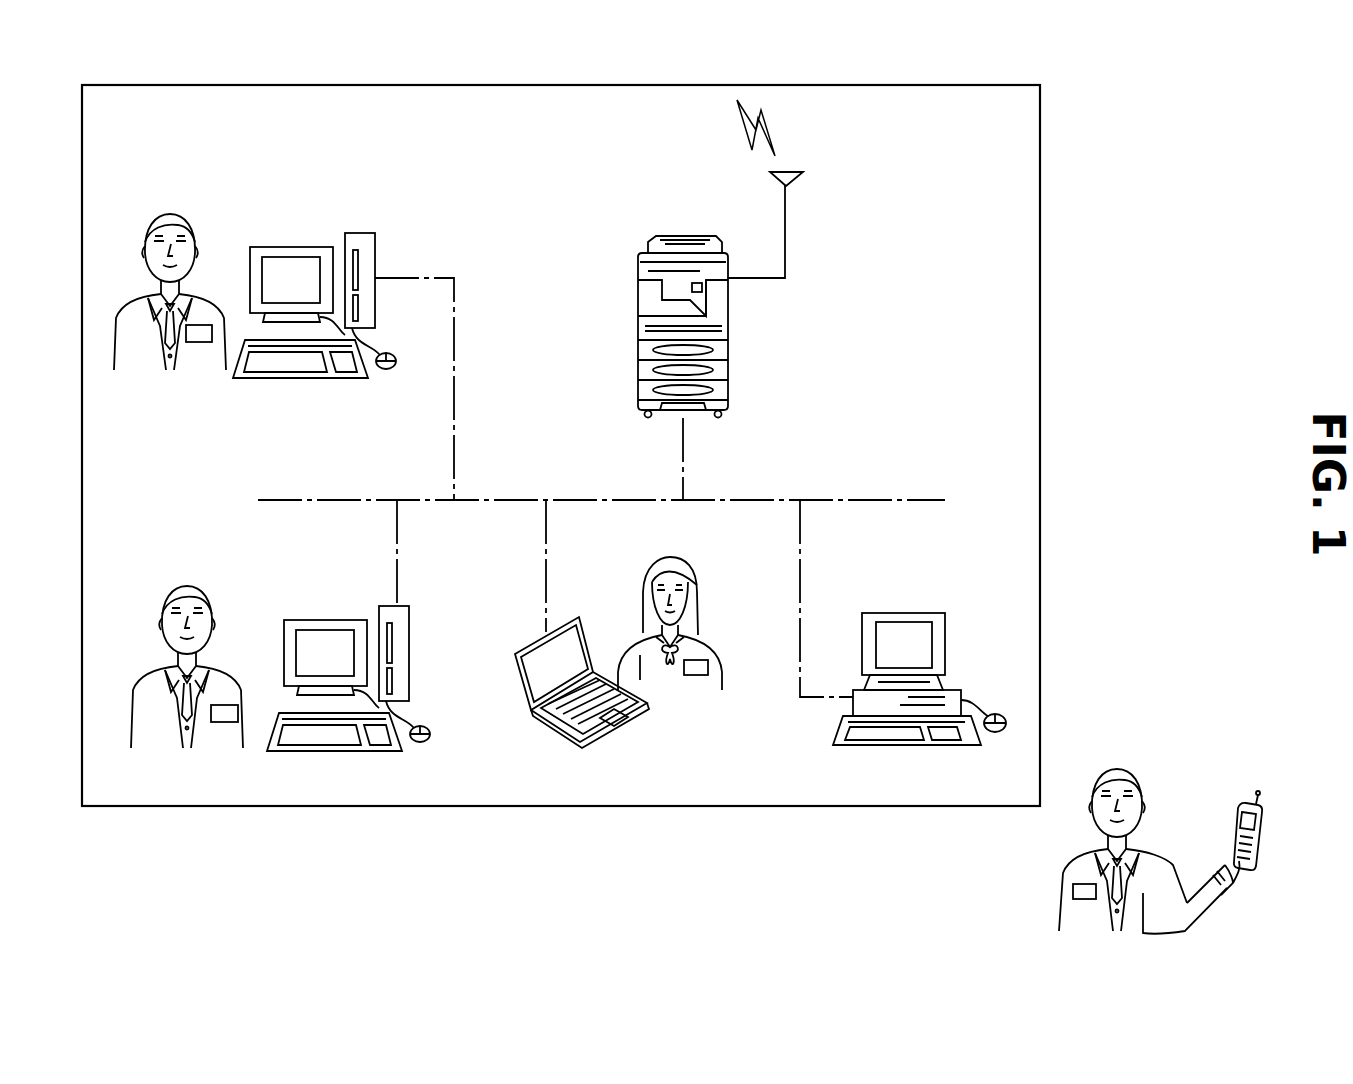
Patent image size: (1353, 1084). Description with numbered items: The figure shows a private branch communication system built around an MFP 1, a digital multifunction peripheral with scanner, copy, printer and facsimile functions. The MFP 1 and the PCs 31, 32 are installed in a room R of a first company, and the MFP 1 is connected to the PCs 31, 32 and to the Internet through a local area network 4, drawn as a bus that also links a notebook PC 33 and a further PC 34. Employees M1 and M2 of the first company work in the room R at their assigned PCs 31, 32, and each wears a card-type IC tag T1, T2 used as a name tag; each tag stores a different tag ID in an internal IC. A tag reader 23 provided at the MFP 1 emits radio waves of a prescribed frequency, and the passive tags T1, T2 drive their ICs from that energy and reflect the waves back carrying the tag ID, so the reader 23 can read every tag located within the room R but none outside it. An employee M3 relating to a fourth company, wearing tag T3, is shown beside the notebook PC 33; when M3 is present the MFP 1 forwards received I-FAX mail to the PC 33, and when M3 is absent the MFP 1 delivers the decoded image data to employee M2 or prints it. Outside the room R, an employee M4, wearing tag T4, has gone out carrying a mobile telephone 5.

The MFP 1 is at (636, 322).
The tag reader 23 is at (785, 222).
The PC 31 is at (365, 233).
The PC 32 is at (411, 636).
The PC 33 is at (556, 724).
The personal computer 34 is at (946, 686).
The Local Area Network 4 is at (868, 500).
The mobile telephone 5 is at (1238, 816).
The room R is at (1042, 181).
The employee M1 is at (177, 216).
The employee M2 is at (169, 593).
The employee M3 is at (695, 562).
The employee M4 is at (1136, 780).
The IC tag T1 is at (200, 343).
The IC tag T2 is at (224, 705).
The wireless tag T3 is at (709, 668).
The wireless tag T4 is at (1073, 891).